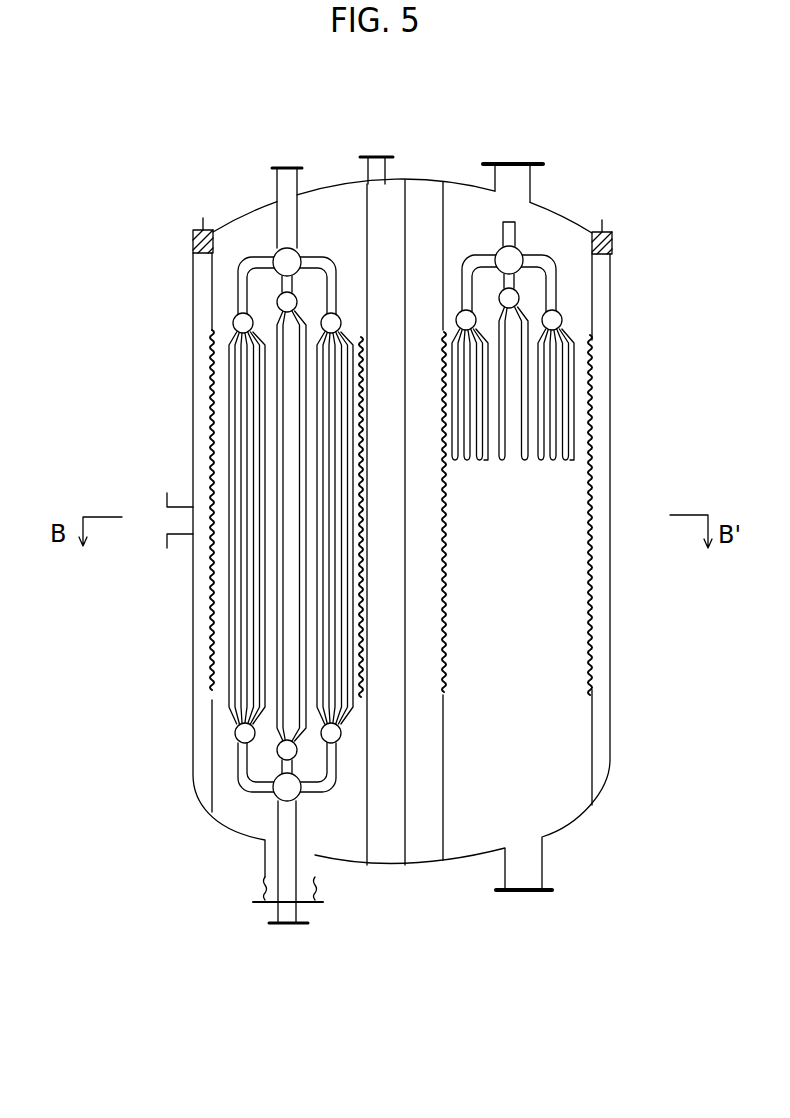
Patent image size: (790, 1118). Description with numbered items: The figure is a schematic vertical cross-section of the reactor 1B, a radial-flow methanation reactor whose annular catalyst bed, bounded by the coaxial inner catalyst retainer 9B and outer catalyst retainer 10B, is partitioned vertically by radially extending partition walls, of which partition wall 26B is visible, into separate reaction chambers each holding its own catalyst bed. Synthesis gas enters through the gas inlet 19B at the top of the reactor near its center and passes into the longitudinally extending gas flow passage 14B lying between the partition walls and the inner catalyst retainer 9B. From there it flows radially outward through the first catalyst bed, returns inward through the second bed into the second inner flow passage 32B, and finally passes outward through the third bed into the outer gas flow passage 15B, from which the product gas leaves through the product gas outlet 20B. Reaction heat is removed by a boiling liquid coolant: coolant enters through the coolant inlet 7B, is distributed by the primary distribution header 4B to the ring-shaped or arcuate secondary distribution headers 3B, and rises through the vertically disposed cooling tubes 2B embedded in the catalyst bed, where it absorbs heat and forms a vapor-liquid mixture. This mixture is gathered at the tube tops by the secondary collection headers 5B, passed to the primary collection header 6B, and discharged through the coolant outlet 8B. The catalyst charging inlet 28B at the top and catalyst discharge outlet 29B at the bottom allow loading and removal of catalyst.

The reactor 1B is at (613, 323).
The cooling tubes 2B is at (232, 642).
The secondary distribution headers 3B is at (236, 738).
The primary distribution header 4B is at (276, 793).
The secondary collection headers 5B is at (234, 317).
The primary collection header 6B is at (275, 250).
The coolant inlet 7B is at (292, 925).
The coolant outlet 8B is at (288, 167).
The inner catalyst retainer 9B is at (448, 633).
The outer catalyst retainer 10B is at (592, 598).
The gas flow passage 14B is at (382, 205).
The outer gas flow passage 15B is at (205, 433).
The gas inlet 19B is at (378, 155).
The product gas outlet 20B is at (175, 522).
The partition wall 26B is at (558, 505).
The catalyst charging inlet 28B is at (517, 160).
The catalyst discharge outlet 29B is at (528, 893).
The second inner flow passage 32B is at (428, 225).